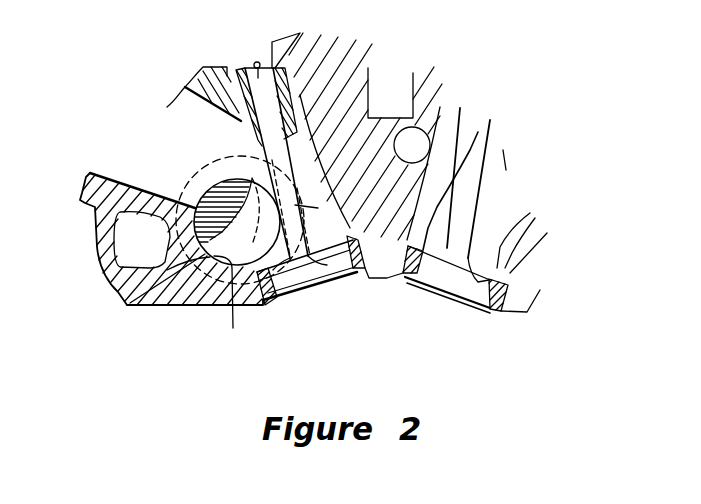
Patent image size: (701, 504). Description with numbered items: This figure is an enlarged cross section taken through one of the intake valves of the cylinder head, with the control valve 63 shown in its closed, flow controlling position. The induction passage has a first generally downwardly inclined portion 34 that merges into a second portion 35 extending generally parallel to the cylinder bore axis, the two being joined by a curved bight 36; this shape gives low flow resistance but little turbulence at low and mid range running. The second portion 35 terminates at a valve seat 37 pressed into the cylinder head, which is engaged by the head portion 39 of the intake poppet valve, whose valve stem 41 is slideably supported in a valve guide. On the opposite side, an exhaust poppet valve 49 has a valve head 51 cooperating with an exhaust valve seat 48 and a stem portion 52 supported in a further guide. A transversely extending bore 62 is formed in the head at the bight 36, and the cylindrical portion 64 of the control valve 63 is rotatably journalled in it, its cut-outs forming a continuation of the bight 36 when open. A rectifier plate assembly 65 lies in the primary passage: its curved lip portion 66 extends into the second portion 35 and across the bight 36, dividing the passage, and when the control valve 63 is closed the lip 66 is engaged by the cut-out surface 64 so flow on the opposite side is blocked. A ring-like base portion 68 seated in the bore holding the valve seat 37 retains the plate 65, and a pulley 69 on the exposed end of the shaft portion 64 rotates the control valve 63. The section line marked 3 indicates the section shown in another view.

The cylinder head body 34 is at (107, 177).
The intake valve stem 41 is at (256, 62).
The head wall / port boss 66 is at (348, 86).
The spark plug bore 35 is at (414, 82).
The exhaust port wall 52 is at (496, 173).
The exhaust valve 49 is at (492, 207).
The exhaust valve seat insert 48 is at (436, 296).
The combustion chamber wall 51 is at (478, 308).
The valve head outline (hidden) 69 is at (184, 216).
The coolant passage 63 is at (210, 186).
The passage bore 36 is at (222, 215).
The passage wall 62 is at (230, 311).
The head deck face 64 is at (128, 307).
The valve head face 65 is at (281, 257).
The intake valve head 39 is at (330, 292).
The valve head bottom face 68 is at (308, 258).
The intake valve seat insert 37 is at (367, 280).
The section line 3- 3 is at (222, 286).